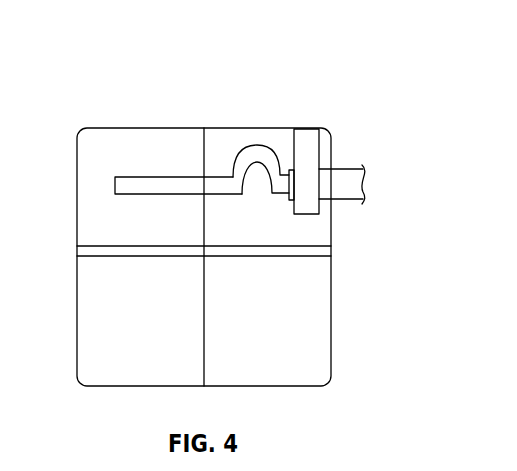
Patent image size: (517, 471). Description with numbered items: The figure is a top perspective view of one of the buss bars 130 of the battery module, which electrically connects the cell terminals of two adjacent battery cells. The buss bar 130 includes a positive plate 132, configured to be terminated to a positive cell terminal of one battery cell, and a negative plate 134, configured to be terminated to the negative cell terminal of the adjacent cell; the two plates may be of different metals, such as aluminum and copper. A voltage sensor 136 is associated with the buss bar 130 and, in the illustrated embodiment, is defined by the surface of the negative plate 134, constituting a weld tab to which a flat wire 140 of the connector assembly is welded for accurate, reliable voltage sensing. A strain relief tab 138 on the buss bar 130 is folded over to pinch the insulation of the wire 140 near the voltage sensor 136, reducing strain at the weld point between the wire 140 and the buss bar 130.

The buss bar 130 is at (273, 64).
The positive plate 132 is at (318, 228).
The negative plate 134 is at (93, 225).
The voltage sensor 136 is at (150, 175).
The strain relief tab 138 is at (308, 153).
The wire 140 is at (127, 186).